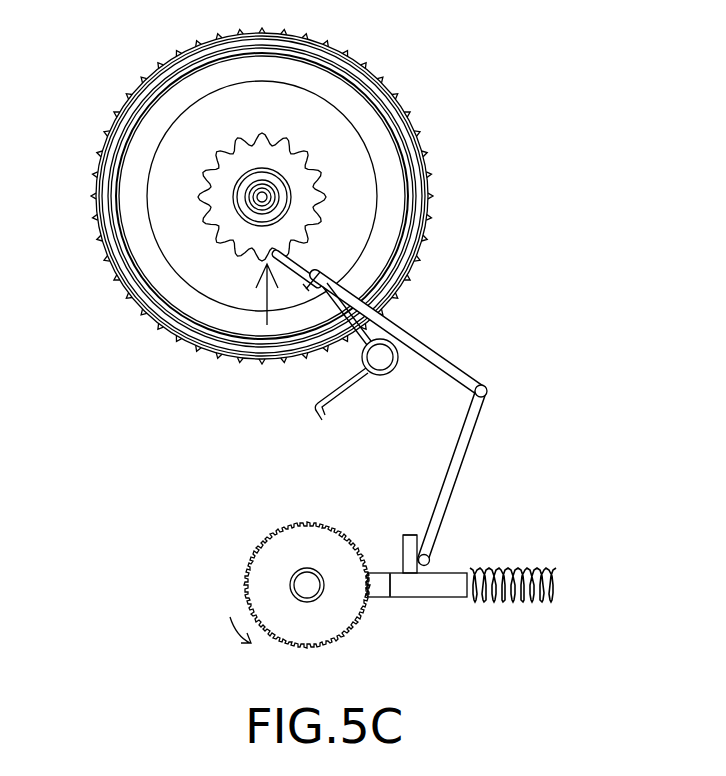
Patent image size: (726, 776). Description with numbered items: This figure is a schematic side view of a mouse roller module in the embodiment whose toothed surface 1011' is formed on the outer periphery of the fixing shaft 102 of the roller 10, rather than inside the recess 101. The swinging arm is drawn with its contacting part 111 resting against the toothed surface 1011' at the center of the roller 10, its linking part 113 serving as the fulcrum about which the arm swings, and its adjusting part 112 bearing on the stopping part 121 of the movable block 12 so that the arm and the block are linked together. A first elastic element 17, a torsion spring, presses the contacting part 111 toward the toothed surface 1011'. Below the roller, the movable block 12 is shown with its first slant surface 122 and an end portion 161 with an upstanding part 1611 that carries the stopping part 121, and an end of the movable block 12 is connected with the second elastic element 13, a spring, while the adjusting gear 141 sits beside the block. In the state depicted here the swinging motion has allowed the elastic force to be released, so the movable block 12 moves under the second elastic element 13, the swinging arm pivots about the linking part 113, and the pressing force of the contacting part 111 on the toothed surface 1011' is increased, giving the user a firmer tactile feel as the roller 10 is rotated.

The roller 10 is at (405, 115).
The recess 101 is at (158, 188).
The toothed surface 1011' is at (183, 160).
The fixing shaft 102 is at (252, 197).
The contacting part 111 is at (268, 256).
The first elastic element 17 is at (330, 300).
The linking part 113 is at (483, 385).
The adjusting part 112 is at (430, 547).
The adjusting gear 141 is at (258, 578).
The movable block 12 is at (440, 588).
The toothed end 161 is at (384, 589).
The first slant surface 122 is at (392, 587).
The post 1611 is at (390, 585).
The stopping part 121 is at (412, 535).
The second elastic element 13 is at (540, 565).